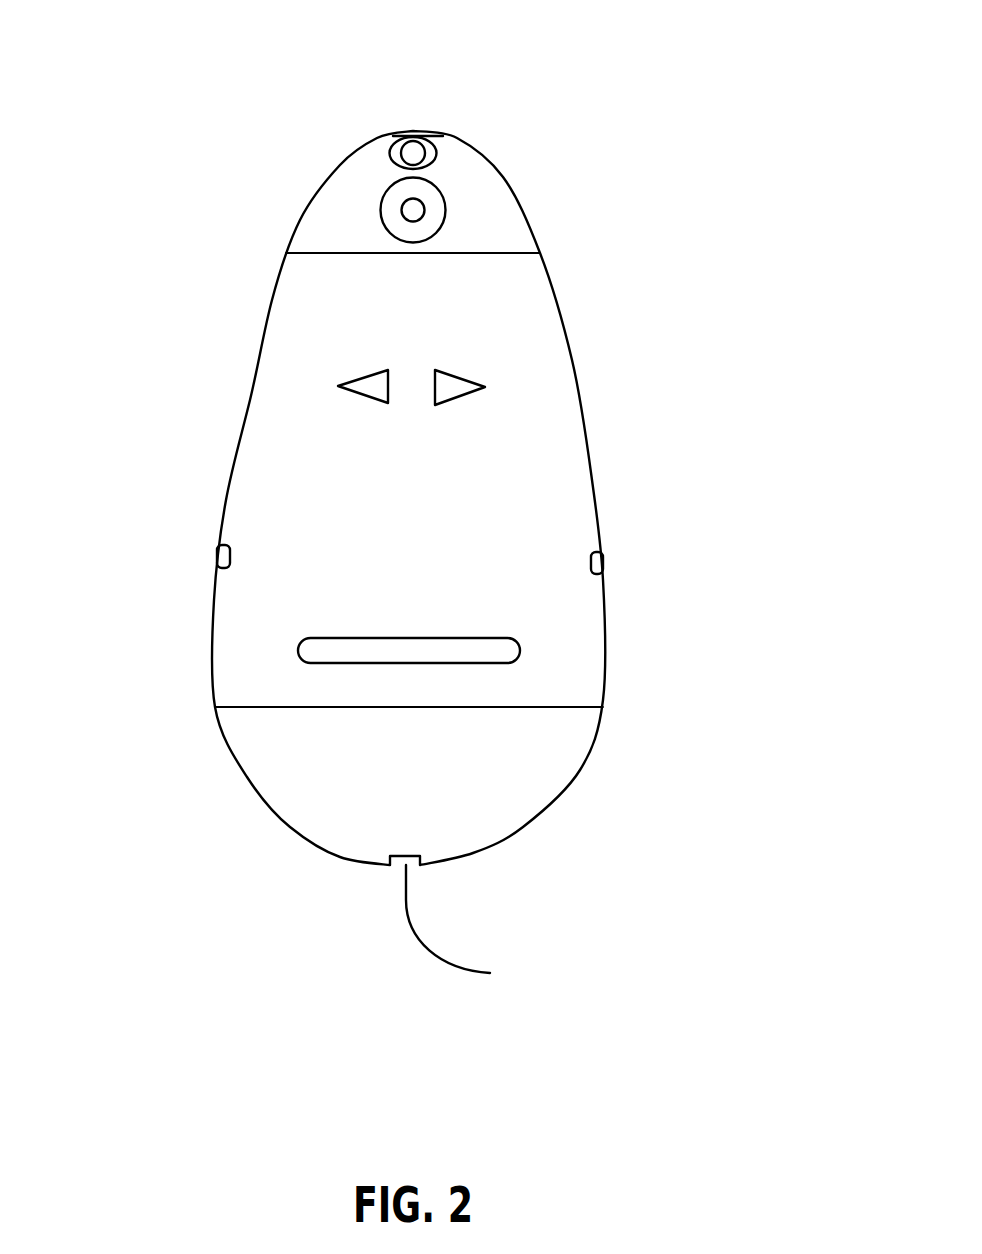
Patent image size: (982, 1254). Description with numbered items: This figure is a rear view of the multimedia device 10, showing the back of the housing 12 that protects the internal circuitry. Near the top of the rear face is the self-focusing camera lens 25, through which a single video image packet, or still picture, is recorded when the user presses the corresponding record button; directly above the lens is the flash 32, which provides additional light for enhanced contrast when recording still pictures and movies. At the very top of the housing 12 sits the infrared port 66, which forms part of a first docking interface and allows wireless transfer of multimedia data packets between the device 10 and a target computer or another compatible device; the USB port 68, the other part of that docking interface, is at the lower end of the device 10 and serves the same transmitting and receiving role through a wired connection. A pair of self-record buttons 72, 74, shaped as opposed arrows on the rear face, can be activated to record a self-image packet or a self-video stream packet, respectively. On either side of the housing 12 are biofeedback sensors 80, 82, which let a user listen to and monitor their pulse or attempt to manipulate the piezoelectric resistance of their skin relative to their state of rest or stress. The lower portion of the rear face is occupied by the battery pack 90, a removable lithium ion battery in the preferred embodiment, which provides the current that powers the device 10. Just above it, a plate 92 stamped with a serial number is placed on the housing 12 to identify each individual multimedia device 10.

The multimedia device 10 is at (628, 104).
The housing 12 is at (213, 670).
The self-focusing camera lens 25 is at (438, 210).
The flash 32 is at (420, 153).
The infrared port 66 is at (413, 130).
The USB port 68 is at (472, 927).
The self-record button 72 is at (363, 382).
The self-record button 74 is at (463, 382).
The biofeedback sensor 80 is at (215, 560).
The biofeedback sensor 82 is at (603, 563).
The battery pack 90 is at (537, 780).
The plate 92 is at (487, 655).